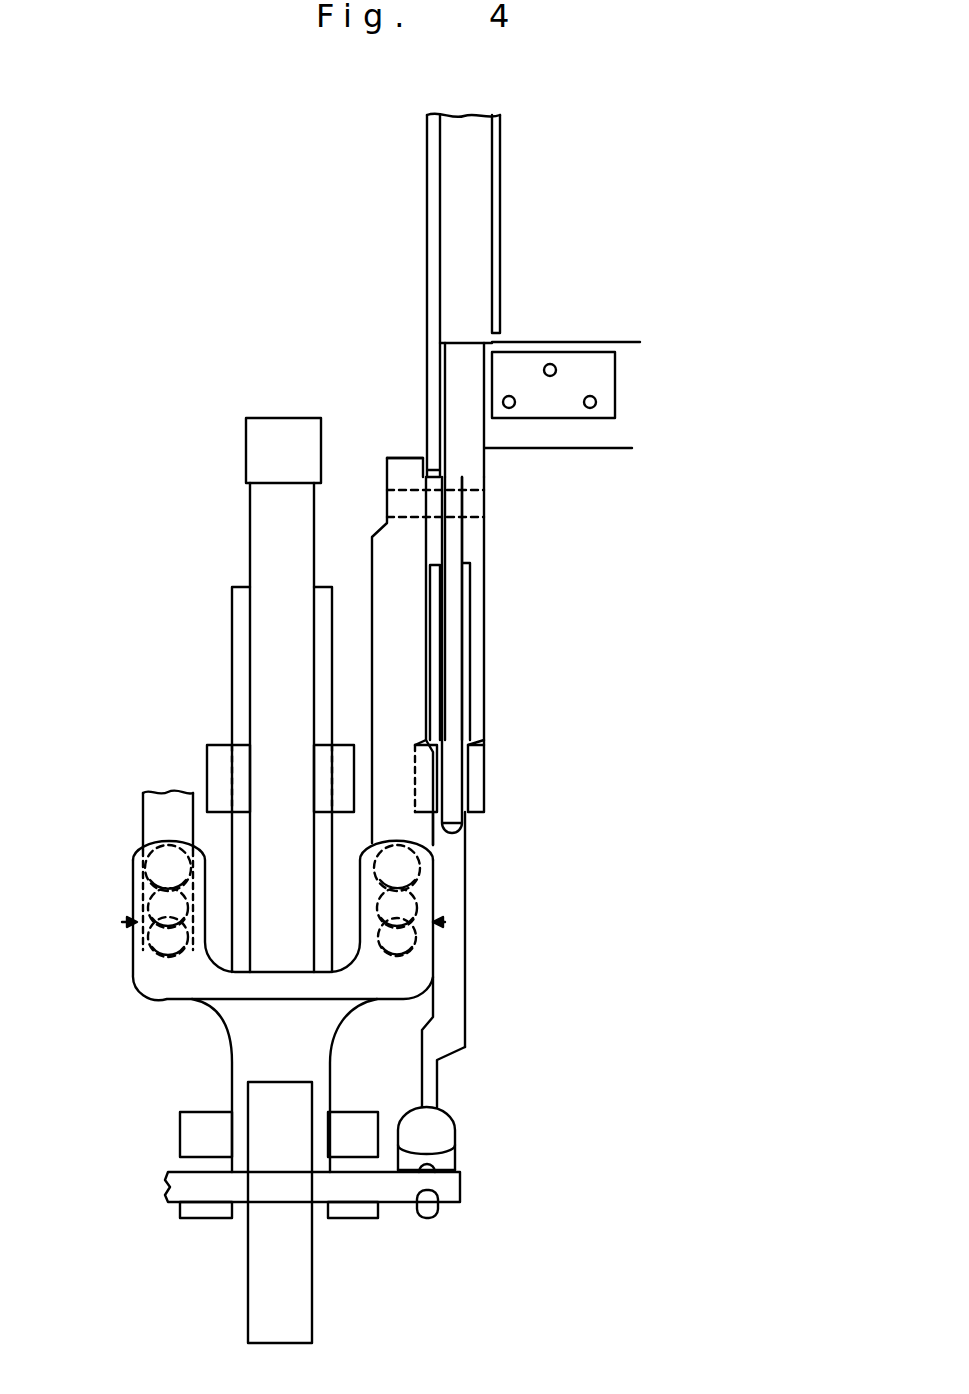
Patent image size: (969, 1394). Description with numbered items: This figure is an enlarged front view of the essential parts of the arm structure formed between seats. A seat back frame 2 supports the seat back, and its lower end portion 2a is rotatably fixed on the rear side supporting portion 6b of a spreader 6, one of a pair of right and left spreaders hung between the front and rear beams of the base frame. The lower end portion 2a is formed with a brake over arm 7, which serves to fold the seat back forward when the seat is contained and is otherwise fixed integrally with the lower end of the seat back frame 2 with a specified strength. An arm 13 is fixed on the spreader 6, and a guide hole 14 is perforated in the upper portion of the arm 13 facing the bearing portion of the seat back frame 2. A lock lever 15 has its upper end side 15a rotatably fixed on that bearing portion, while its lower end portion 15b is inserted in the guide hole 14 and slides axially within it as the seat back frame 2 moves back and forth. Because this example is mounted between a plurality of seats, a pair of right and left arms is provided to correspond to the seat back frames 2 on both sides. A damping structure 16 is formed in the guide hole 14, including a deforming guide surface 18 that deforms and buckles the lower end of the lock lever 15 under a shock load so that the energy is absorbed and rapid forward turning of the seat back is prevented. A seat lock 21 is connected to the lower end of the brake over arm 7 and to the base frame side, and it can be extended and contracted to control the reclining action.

The seat back frame 2 is at (513, 237).
The lower end portion 2a is at (456, 597).
The spreader 6 is at (233, 1266).
The rear side supporting portion 6b is at (255, 551).
The brake over arm 7 is at (457, 938).
The arm 13 is at (242, 1048).
The guide hole 14 is at (163, 852).
The lock lever 15 is at (410, 646).
The upper end side 15a is at (400, 458).
The lower end portion 15b is at (145, 893).
The damping structure 16 is at (122, 922).
The deforming guide surface 18 is at (165, 951).
The seat lock 21 is at (447, 1133).